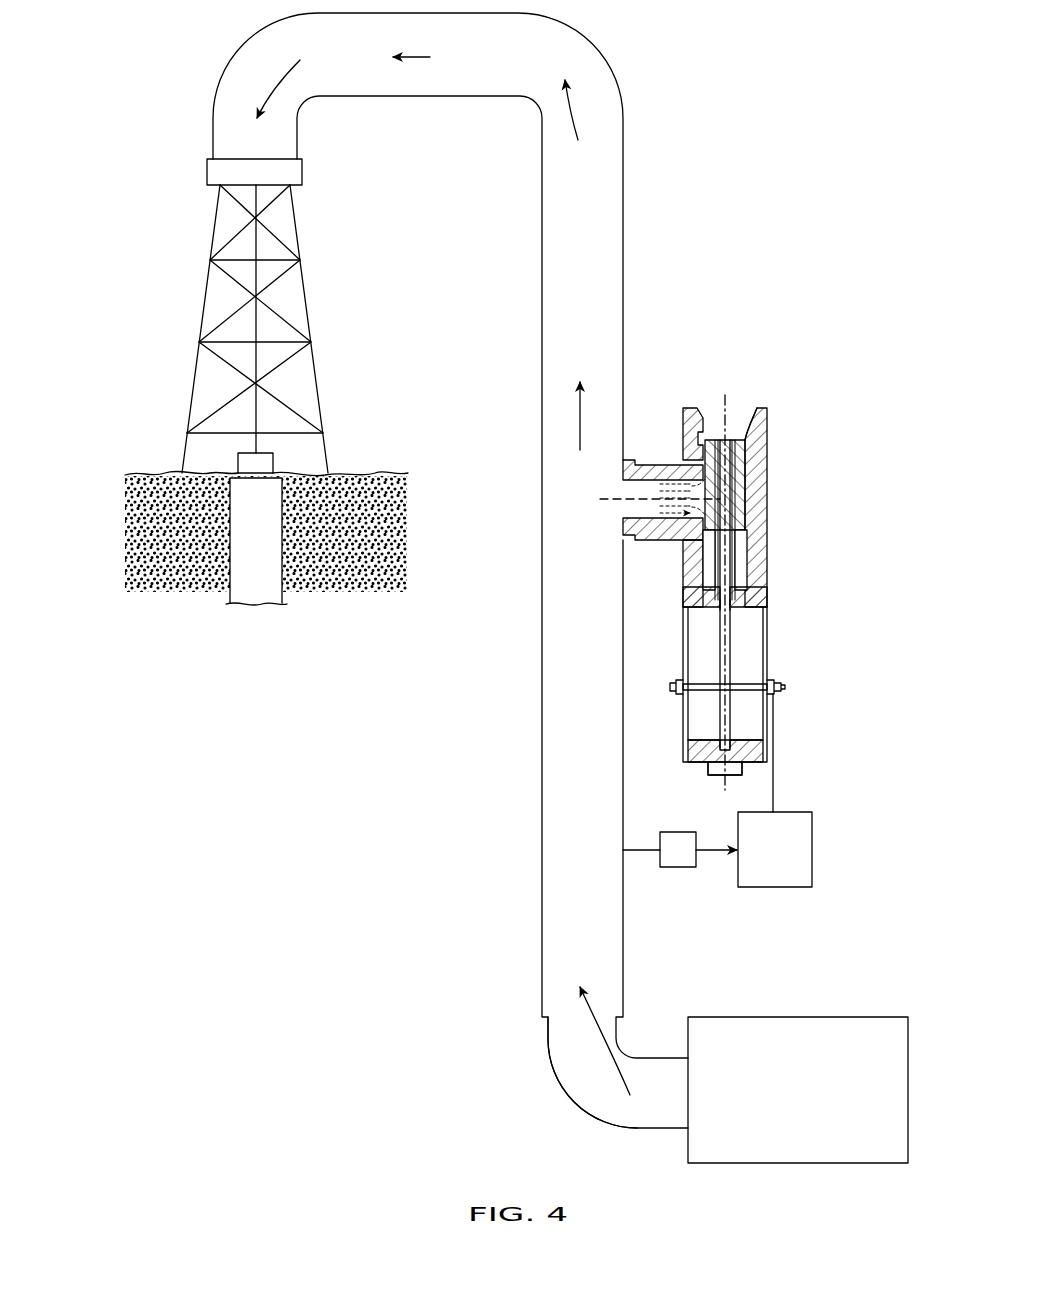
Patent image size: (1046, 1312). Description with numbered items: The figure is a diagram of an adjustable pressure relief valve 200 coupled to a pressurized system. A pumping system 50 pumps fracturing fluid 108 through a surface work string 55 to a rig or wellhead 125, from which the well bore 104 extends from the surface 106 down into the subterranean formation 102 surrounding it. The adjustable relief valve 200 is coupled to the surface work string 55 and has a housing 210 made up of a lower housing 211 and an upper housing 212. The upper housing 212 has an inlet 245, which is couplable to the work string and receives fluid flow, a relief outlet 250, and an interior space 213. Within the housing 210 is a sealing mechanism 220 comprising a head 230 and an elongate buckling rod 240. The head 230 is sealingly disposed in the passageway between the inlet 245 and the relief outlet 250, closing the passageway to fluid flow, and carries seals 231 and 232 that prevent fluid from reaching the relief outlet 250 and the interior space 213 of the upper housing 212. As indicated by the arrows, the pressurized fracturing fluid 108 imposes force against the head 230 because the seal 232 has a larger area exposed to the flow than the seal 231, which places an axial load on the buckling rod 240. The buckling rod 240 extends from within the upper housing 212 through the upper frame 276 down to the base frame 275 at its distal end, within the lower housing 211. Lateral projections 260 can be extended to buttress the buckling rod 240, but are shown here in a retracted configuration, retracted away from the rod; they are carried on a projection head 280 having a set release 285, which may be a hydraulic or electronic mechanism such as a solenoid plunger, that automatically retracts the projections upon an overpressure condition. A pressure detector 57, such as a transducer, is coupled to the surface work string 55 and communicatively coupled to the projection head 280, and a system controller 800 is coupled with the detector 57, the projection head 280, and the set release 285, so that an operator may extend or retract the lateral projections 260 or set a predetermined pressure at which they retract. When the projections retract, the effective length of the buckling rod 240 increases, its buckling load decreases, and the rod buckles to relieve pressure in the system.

The pumping system 50 is at (800, 1017).
The surface work string 55 is at (540, 360).
The pressure detector 57 is at (678, 867).
The subterranean formation 102 is at (380, 533).
The well bore 104 is at (282, 556).
The surface 106 is at (383, 471).
The fracturing fluid 108 is at (580, 1010).
The rig or wellhead 125 is at (207, 278).
The adjustable pressure relief valve 200 is at (791, 387).
The housing 210 is at (770, 572).
The lower housing 211 is at (685, 725).
The upper housing 212 is at (770, 487).
The interior space 213 is at (742, 560).
The sealing mechanism 220 is at (705, 630).
The head 230 is at (738, 462).
The seal 231 is at (745, 440).
The seal 232 is at (747, 527).
The buckling rod 240 is at (733, 623).
The inlet 245 is at (620, 488).
The relief outlet 250 is at (713, 417).
The lateral projections 260 is at (700, 683).
The base frame 275 is at (700, 752).
The upper frame 276 is at (697, 605).
The projection head 280 is at (786, 689).
The set release 285 is at (676, 680).
The system controller 800 is at (812, 850).